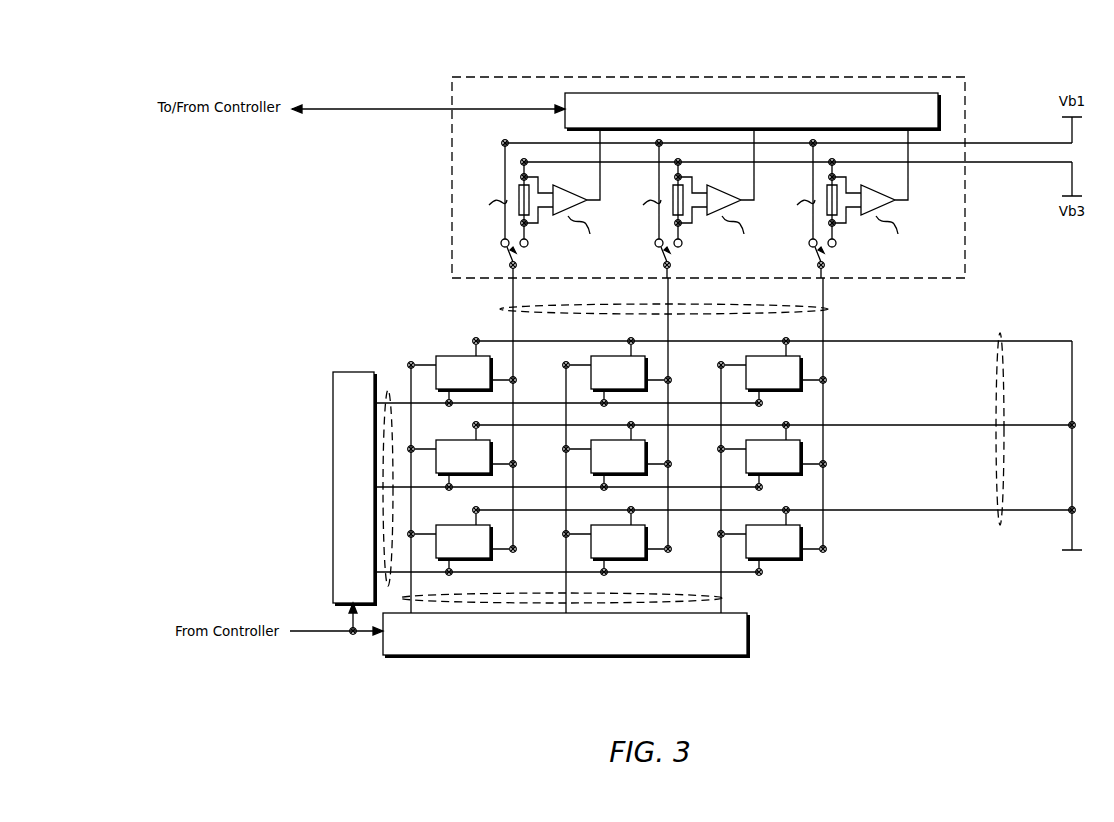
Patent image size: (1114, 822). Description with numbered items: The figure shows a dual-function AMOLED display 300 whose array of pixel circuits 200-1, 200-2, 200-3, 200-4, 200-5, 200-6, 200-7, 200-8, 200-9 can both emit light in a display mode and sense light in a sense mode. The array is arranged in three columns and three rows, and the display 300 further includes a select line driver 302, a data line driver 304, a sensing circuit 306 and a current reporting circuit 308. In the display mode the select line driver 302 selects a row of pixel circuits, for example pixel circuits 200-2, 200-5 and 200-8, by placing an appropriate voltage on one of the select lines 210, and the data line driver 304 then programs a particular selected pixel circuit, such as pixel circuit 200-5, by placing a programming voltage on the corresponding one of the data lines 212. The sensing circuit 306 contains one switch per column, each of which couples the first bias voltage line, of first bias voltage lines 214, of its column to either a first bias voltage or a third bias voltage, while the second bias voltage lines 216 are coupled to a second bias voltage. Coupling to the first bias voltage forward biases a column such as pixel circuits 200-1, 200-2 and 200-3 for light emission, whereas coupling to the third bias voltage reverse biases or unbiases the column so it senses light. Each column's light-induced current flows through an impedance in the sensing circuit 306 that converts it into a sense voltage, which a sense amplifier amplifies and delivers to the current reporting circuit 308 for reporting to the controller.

The pixel circuit 200-1 is at (462, 372).
The pixel circuit 200-2 is at (462, 456).
The pixel circuit 200-3 is at (462, 541).
The pixel circuit 200-4 is at (617, 372).
The pixel circuit 200-5 is at (617, 456).
The pixel circuit 200-6 is at (617, 541).
The pixel circuit 200-7 is at (772, 372).
The pixel circuit 200-8 is at (772, 456).
The pixel circuit 200-9 is at (772, 541).
The select lines 210 is at (388, 390).
The data lines 212 is at (725, 600).
The first bias voltage lines 214 is at (830, 310).
The second bias voltage lines 216 is at (1000, 526).
The select line driver 302 is at (333, 483).
The data line driver 304 is at (557, 657).
The sensing circuit 306 is at (437, 188).
The current reporting circuit 308 is at (753, 93).
The dual-function AMOLED display 300 is at (985, 703).